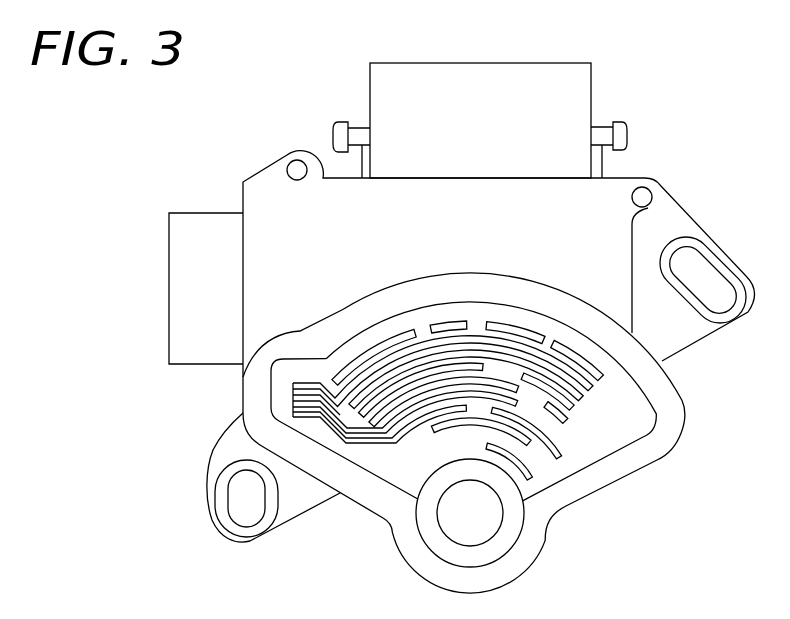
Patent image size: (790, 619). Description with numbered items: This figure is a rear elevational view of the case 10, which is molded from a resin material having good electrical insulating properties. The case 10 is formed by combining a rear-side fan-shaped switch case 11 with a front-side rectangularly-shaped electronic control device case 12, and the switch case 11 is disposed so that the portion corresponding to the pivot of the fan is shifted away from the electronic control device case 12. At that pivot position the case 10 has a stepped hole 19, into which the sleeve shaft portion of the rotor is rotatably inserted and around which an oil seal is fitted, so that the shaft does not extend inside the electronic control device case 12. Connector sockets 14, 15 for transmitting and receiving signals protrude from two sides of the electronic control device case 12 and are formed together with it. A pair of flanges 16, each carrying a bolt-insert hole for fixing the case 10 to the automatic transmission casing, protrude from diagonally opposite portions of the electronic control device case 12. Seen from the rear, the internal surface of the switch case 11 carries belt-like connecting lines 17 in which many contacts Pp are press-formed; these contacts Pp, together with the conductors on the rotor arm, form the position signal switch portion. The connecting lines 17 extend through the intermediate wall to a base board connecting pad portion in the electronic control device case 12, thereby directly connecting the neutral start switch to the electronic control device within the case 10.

The case 10 is at (683, 168).
The switch case 11 is at (367, 493).
The electronic control device case 12 is at (600, 197).
The connector socket 14 is at (573, 91).
The connector socket 15 is at (169, 309).
The flange 16 is at (218, 458).
The connecting line 17 is at (448, 300).
The stepped hole 19 is at (478, 545).
The contact Pp is at (525, 330).